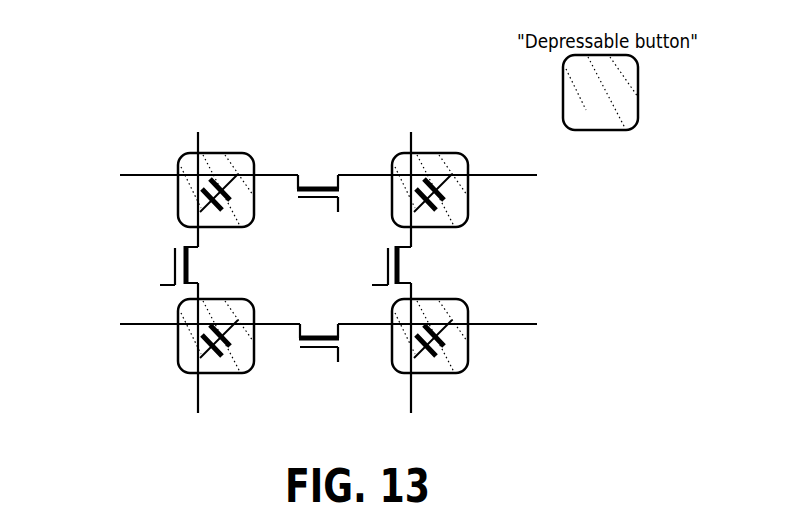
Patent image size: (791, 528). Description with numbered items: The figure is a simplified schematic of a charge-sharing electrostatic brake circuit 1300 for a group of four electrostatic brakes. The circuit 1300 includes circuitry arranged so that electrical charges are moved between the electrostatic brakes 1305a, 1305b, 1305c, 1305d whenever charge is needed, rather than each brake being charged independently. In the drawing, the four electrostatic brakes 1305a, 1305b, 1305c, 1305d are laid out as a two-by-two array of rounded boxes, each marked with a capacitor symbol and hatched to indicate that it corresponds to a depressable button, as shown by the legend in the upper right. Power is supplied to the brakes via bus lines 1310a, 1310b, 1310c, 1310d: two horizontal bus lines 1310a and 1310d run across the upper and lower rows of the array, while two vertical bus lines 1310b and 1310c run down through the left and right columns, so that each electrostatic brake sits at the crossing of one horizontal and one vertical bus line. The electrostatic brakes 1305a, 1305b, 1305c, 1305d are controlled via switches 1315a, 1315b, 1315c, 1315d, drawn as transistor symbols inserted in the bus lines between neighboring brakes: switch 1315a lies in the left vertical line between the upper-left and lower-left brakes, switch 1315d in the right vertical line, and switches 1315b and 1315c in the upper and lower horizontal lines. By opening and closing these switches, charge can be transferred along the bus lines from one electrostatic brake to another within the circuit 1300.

The charge-sharing electrostatic brake circuit 1300 is at (187, 61).
The bus line 1310a is at (137, 173).
The bus line 1310b is at (199, 140).
The bus line 1310c is at (410, 140).
The bus line 1310d is at (135, 322).
The electrostatic brake 1305a is at (224, 214).
The electrostatic brake 1305b is at (445, 205).
The electrostatic brake 1305c is at (222, 362).
The electrostatic brake 1305d is at (447, 357).
The switch 1315a is at (175, 262).
The switch 1315b is at (313, 190).
The switch 1315c is at (317, 335).
The switch 1315d is at (400, 262).